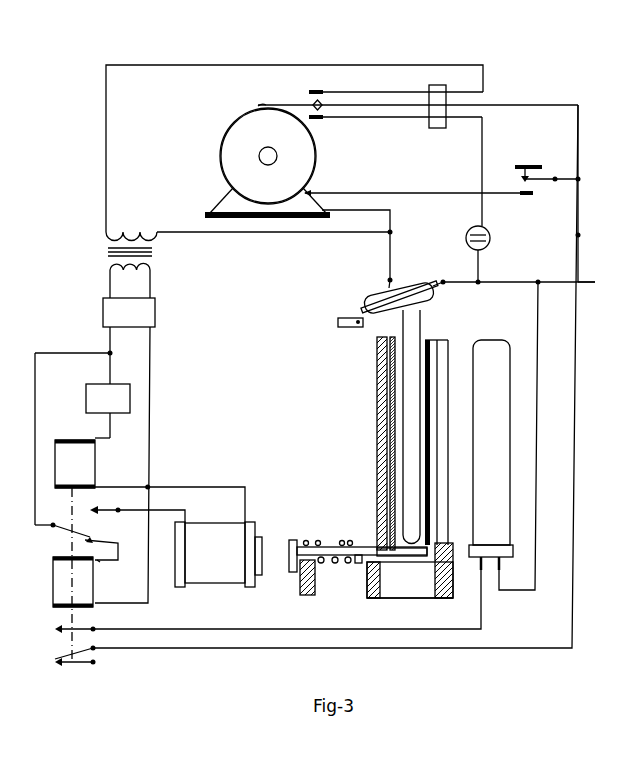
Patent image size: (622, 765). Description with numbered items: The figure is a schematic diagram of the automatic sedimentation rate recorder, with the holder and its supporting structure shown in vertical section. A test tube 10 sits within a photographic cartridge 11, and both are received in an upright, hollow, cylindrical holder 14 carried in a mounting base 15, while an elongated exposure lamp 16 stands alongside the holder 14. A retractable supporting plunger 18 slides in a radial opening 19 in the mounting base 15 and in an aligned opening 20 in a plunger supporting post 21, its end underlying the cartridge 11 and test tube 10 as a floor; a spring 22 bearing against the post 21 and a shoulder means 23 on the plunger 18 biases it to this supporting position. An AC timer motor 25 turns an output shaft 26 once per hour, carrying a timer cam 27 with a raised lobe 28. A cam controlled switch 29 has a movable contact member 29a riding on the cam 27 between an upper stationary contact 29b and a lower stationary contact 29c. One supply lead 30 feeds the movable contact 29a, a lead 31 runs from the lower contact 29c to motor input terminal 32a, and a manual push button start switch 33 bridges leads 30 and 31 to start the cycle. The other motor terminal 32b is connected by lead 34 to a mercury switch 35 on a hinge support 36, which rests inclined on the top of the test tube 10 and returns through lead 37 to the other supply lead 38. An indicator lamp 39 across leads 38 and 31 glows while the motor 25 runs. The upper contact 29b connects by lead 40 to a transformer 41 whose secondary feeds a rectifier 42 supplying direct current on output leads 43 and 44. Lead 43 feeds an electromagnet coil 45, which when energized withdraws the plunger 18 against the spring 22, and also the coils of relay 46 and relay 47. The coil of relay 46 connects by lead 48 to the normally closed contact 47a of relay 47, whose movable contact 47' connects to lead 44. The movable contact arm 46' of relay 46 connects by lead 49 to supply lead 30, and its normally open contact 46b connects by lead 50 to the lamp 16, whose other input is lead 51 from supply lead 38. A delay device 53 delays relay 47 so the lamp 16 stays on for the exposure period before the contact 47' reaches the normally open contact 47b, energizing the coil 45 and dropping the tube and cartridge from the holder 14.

The test tube 10 is at (422, 320).
The cartridge 11 is at (432, 340).
The holder 14 is at (376, 366).
The mounting base 15 is at (377, 599).
The exposure lamp 16 is at (487, 340).
The retractable supporting plunger 18 is at (346, 546).
The radial opening 19 is at (382, 580).
The aligned opening 20 is at (300, 536).
The plunger supporting post 21 is at (311, 597).
The spring 22 is at (327, 547).
The shoulder means 23 is at (358, 565).
The AC timer motor 25 is at (218, 167).
The output shaft 26 is at (259, 156).
The timer cam 27 is at (224, 136).
The raised lobe 28 is at (258, 107).
The cam controlled switch 29 is at (418, 96).
The movable contact member 29a is at (270, 101).
The upper stationary contact 29b is at (376, 90).
The lower stationary contact 29c is at (380, 119).
The supply lead 30 is at (581, 234).
The lead 31 is at (481, 145).
The input terminal 32a is at (307, 192).
The input terminal 32b is at (324, 209).
The manual push button start switch 33 is at (545, 197).
The lead 34 is at (392, 222).
The mercury switch 35 is at (410, 283).
The hinge support 36 is at (371, 323).
The lead 37 is at (463, 283).
The supply lead 38 is at (588, 283).
The indicator lamp 39 is at (491, 238).
The lead 40 is at (163, 68).
The transformer 41 is at (152, 253).
The rectifier 42 is at (129, 312).
The rectifier output lead 43 is at (151, 357).
The rectifier output lead 44 is at (108, 340).
The electromagnet coil 45 is at (218, 554).
The relay 46 is at (73, 582).
The movable contact arm 46' is at (53, 651).
The normally open stationary contact 46b is at (68, 624).
The relay 47 is at (75, 551).
The movable contact member 47' is at (45, 536).
The normally closed stationary contact 47a is at (82, 546).
The normally open stationary contact 47b is at (95, 509).
The lead 48 is at (100, 562).
The lead 49 is at (575, 461).
The lead 50 is at (300, 630).
The lead 51 is at (537, 421).
The delay device 53 is at (108, 411).